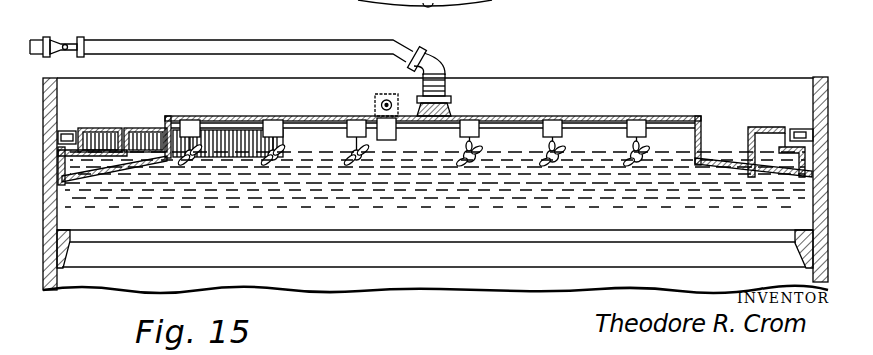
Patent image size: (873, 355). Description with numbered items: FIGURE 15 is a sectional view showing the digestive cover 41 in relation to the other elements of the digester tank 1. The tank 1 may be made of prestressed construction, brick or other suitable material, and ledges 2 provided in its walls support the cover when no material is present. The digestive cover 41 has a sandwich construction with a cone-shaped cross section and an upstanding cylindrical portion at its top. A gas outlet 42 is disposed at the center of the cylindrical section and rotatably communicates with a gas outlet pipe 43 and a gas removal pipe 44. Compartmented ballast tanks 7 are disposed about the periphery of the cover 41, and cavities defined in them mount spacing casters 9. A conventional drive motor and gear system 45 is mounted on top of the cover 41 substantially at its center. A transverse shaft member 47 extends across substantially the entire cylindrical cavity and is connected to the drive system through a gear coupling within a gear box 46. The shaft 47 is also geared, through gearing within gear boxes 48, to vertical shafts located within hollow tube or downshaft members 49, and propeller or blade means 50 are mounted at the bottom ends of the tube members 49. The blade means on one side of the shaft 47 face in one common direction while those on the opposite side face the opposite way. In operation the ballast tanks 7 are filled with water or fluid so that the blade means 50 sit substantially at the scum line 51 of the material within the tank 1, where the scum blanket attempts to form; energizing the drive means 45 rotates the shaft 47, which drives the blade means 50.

The digester tank 1 is at (103, 85).
The ledges 2 is at (65, 232).
The compartmented ballast tanks 7 is at (767, 142).
The spacing casters 9 is at (810, 130).
The digestive cover 41 is at (684, 110).
The gas outlet 42 is at (447, 118).
The gas outlet pipe 43 is at (443, 88).
The gas removal pipe 44 is at (182, 48).
The drive motor and gear system 45 is at (372, 108).
The gear box 46 is at (396, 133).
The transverse shaft member 47 is at (512, 125).
The gear boxes 48 is at (633, 125).
The hollow tube or downshaft members 49 is at (352, 142).
The propeller or blade means 50 is at (352, 162).
The surface or scum line 51 is at (227, 150).